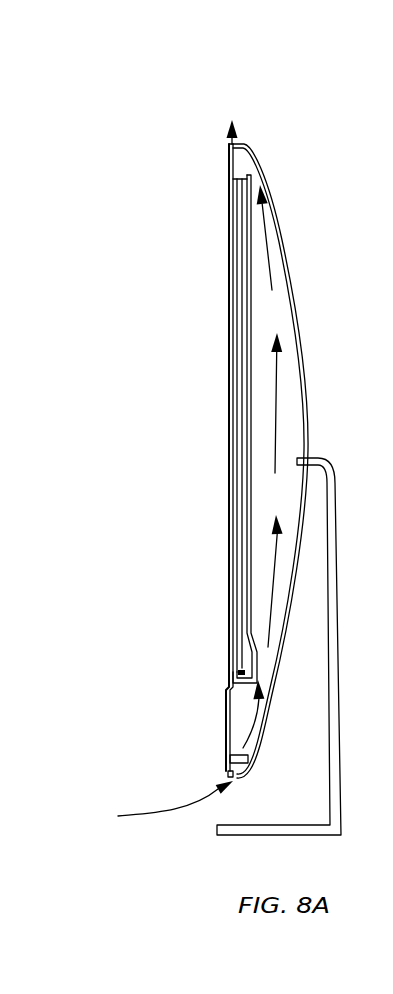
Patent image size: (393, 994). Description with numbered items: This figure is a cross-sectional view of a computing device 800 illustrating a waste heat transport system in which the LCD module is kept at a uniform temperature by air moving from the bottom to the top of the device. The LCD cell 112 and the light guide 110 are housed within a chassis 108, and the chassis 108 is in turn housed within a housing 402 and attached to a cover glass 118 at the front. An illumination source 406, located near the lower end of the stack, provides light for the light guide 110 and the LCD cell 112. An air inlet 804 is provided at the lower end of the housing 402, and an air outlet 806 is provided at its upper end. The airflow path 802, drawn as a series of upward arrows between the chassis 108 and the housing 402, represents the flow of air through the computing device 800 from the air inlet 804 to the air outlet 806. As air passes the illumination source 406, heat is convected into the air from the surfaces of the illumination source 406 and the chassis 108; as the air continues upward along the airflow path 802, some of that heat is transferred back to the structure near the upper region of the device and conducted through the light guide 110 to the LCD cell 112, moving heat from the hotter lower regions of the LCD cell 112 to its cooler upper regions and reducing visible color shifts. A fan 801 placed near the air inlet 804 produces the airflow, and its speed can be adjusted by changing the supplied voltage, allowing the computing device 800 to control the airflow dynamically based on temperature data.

The computing device 800 is at (207, 89).
The air outlet 806 is at (240, 145).
The housing 402 is at (258, 177).
The cover glass 118 is at (226, 163).
The LCD cell 112 is at (237, 227).
The light guide 110 is at (242, 262).
The airflow path 802 is at (277, 400).
The illumination source 406 is at (238, 673).
The chassis 108 is at (258, 655).
The fan 801 is at (230, 758).
The air inlet 804 is at (228, 776).